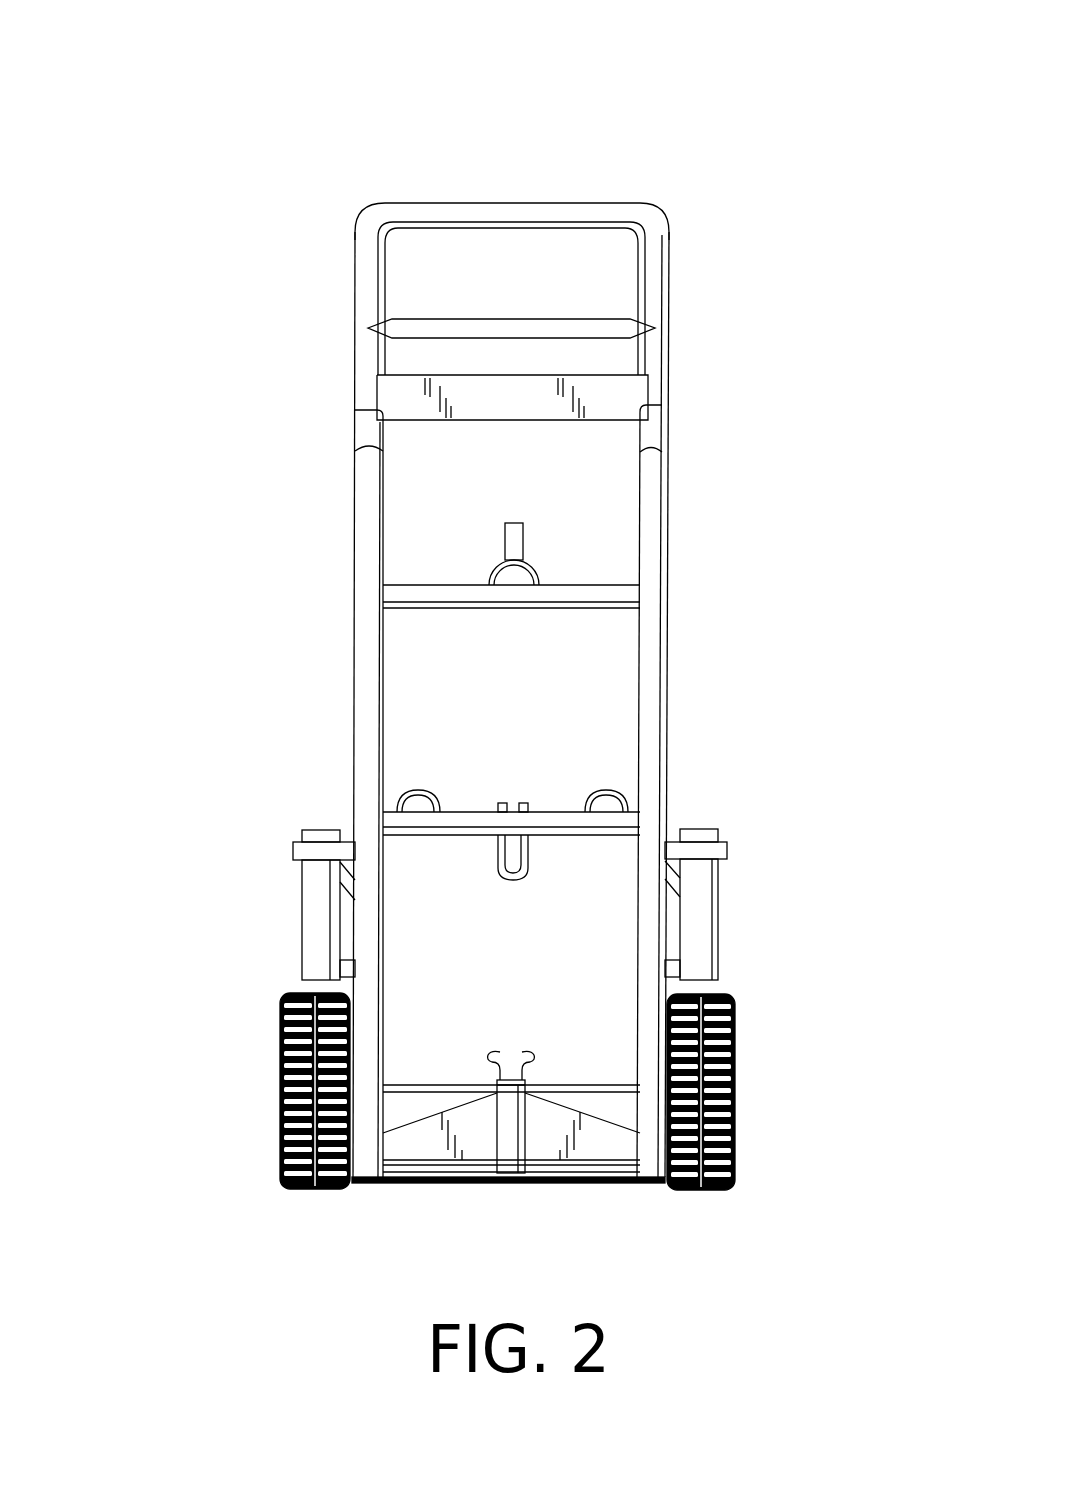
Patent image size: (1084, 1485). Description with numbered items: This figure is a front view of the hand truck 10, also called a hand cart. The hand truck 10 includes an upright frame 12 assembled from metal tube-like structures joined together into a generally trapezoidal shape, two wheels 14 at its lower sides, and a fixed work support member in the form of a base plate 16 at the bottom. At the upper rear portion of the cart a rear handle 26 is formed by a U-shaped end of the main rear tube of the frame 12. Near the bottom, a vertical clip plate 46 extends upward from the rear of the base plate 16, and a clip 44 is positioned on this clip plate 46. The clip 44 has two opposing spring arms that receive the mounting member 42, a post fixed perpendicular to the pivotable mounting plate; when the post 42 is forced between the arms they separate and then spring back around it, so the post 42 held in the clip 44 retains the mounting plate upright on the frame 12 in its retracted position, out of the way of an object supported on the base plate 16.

The hand truck 10 is at (236, 189).
The frame 12 is at (655, 547).
The wheels 14 is at (735, 1052).
The base plate 16 is at (470, 1183).
The rear handle 26 is at (580, 208).
The mounting member 42 is at (510, 1137).
The clip 44 is at (490, 1064).
The clip plate 46 is at (423, 1137).